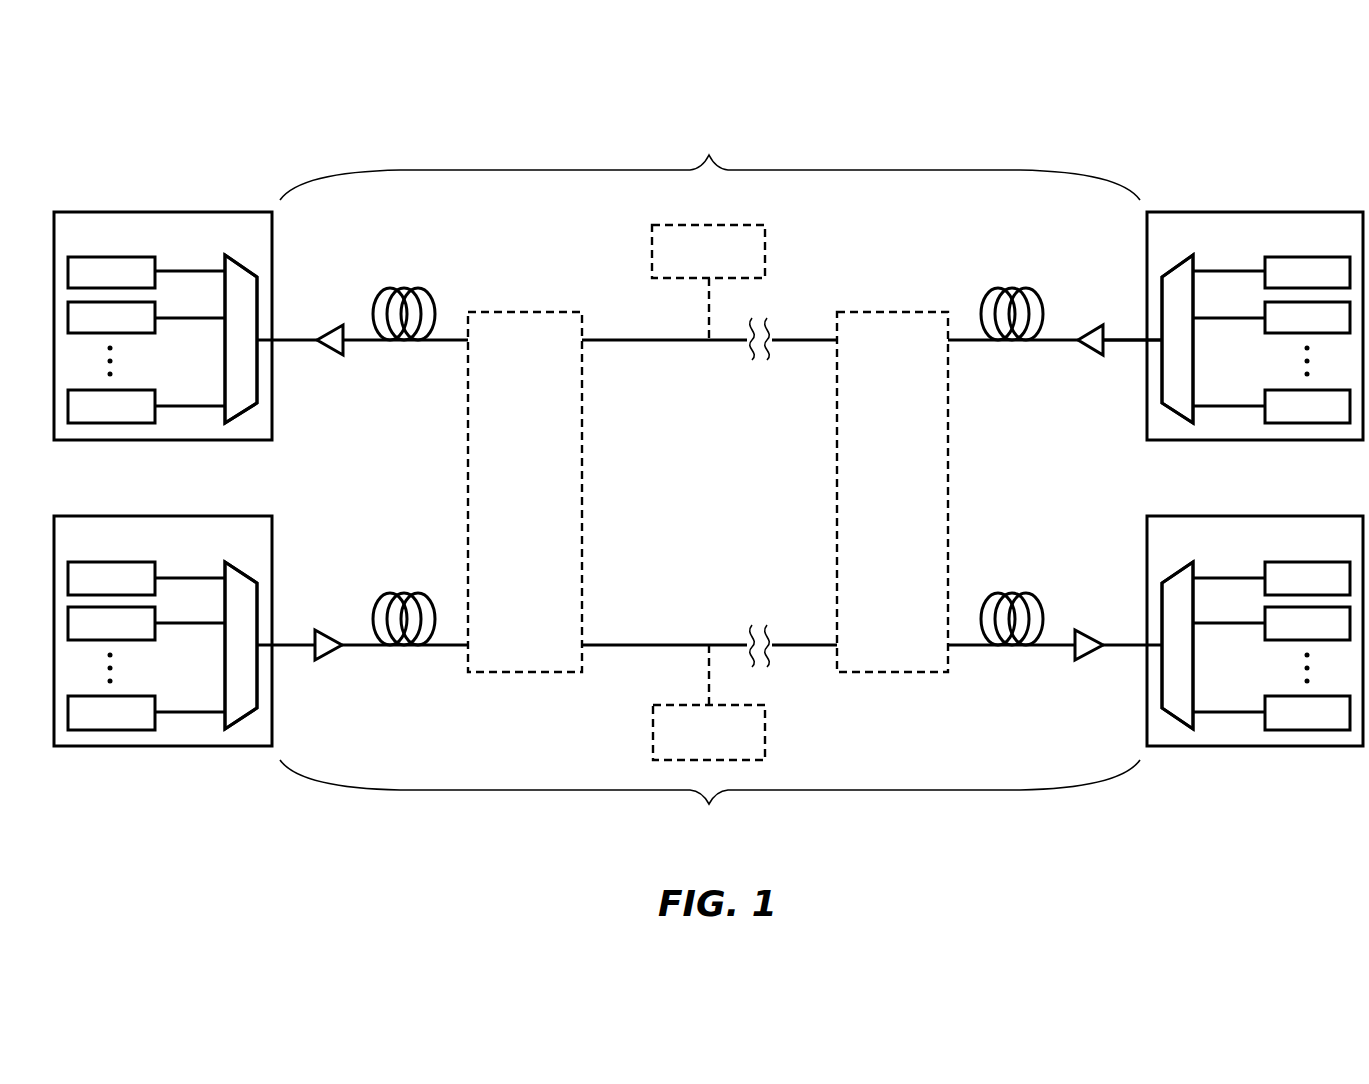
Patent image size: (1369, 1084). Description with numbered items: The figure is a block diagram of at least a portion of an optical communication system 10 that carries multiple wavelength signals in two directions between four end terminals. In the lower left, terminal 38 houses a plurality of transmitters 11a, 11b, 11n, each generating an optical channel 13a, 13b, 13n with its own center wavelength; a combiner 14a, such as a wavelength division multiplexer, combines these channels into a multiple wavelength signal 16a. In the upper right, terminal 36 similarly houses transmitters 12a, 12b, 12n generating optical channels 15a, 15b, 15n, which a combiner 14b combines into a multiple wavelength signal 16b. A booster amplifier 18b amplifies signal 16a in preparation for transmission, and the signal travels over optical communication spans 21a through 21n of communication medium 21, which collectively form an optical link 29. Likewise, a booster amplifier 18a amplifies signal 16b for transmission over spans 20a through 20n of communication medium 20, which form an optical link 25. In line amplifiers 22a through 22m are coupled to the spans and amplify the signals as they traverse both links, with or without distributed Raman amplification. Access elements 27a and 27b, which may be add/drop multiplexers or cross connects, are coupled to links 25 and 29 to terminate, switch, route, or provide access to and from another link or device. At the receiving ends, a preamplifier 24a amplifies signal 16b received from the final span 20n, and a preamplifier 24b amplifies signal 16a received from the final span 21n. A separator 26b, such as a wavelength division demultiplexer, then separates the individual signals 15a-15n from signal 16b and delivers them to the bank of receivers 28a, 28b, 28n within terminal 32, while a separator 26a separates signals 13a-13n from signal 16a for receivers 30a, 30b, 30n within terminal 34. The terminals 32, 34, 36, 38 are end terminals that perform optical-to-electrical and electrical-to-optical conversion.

The optical communication system 10 is at (1268, 162).
The transmitter 11a is at (111, 578).
The transmitter 11b is at (111, 623).
The transmitter 11n is at (111, 713).
The transmitter 12a is at (1307, 272).
The transmitter 12b is at (1307, 317).
The transmitter 12n is at (1307, 406).
The optical channel 13a is at (167, 579).
The optical channel 13b is at (167, 624).
The optical channel 13n is at (167, 711).
The combiner 14a is at (243, 574).
The combiner 14b is at (1178, 267).
The optical channel 15a is at (167, 272).
The optical channel 15b is at (167, 319).
The optical channel 15n is at (167, 405).
The multiple wavelength signal 16a is at (287, 647).
The multiple wavelength signal 16b is at (1132, 342).
The booster amplifier 18a is at (1088, 328).
The booster amplifier 18b is at (330, 632).
The communication span 20 is at (633, 340).
The optical communication span 20a is at (1000, 342).
The optical communication span 20n is at (392, 342).
The communication span 21 is at (633, 647).
The optical communication span 21a is at (393, 647).
The optical communication span 21n is at (1000, 647).
The in line amplifier 22a is at (525, 492).
The in line amplifier 22m is at (892, 492).
The preamplifier 24a is at (328, 325).
The preamplifier 24b is at (1088, 632).
The optical link 25 is at (710, 165).
The separator 26a is at (1178, 574).
The separator 26b is at (243, 267).
The access element 27a is at (708, 282).
The access element 27b is at (709, 702).
The receiver 28a is at (111, 272).
The receiver 28b is at (111, 317).
The receiver 28n is at (111, 406).
The optical link 29 is at (710, 797).
The receiver 30a is at (1307, 578).
The receiver 30b is at (1307, 623).
The receiver 30n is at (1307, 713).
The terminal 32 is at (163, 326).
The terminal 34 is at (1255, 631).
The terminal 36 is at (1255, 326).
The terminal 38 is at (163, 631).